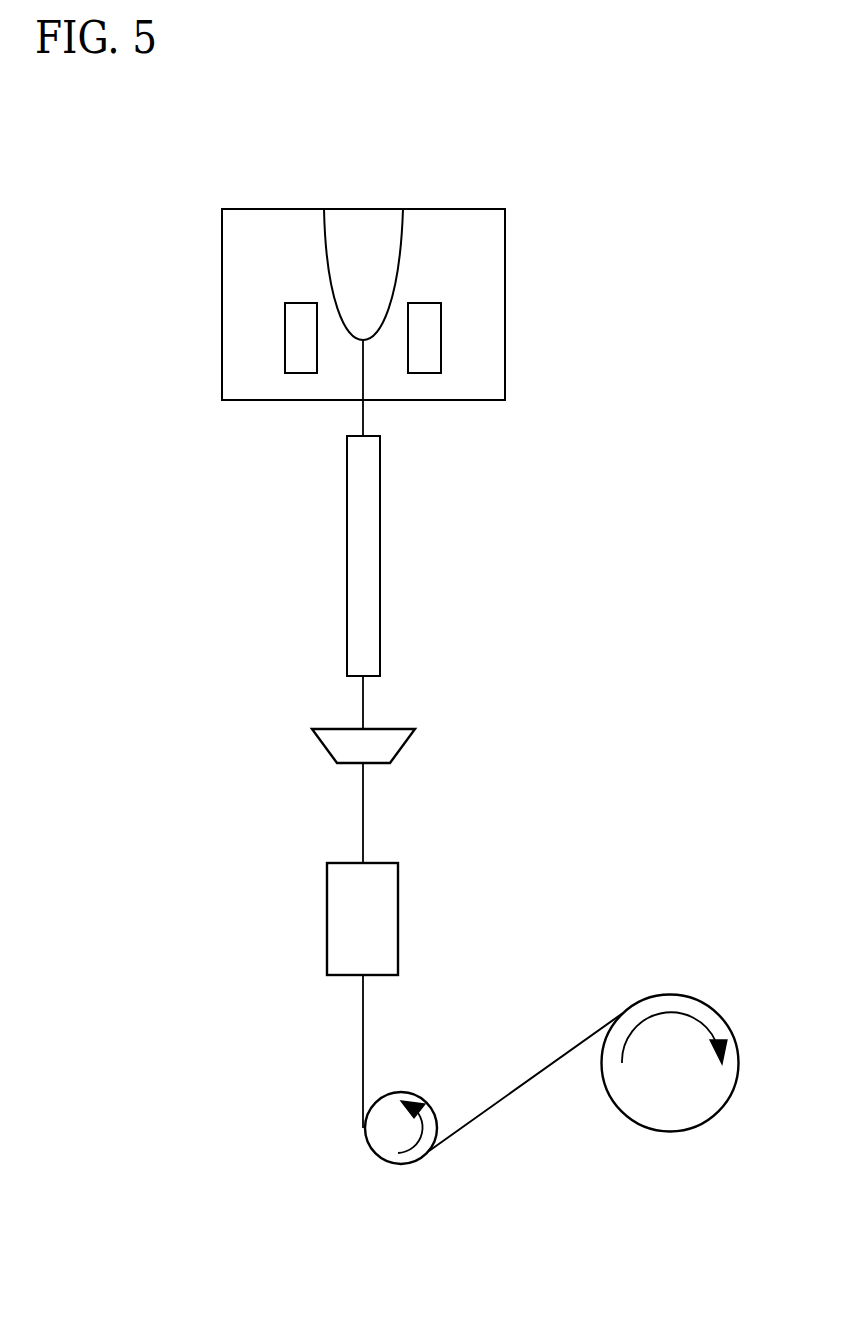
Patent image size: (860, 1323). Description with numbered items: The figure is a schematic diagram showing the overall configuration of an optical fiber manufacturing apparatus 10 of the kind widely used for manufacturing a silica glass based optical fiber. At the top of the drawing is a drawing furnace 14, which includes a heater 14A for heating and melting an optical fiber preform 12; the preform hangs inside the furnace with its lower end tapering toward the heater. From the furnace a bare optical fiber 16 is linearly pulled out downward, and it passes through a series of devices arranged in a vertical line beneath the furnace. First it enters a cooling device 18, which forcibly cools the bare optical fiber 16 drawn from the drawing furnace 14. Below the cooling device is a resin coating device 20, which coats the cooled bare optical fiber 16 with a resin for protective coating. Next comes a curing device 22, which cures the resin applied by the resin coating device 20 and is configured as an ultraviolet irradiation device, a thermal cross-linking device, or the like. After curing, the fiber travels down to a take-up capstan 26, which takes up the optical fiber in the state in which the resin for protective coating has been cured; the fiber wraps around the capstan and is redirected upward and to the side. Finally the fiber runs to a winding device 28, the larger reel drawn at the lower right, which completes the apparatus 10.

The optical fiber manufacturing apparatus 10 is at (538, 172).
The optical fiber preform 12 is at (377, 260).
The drawing furnace 14 is at (506, 280).
The heater 14A is at (427, 338).
The bare optical fiber 16 is at (362, 418).
The cooling device 18 is at (370, 544).
The resin coating device 20 is at (388, 745).
The curing device 22 is at (382, 918).
The take-up capstan 26 is at (388, 1135).
The winding device 28 is at (673, 1090).